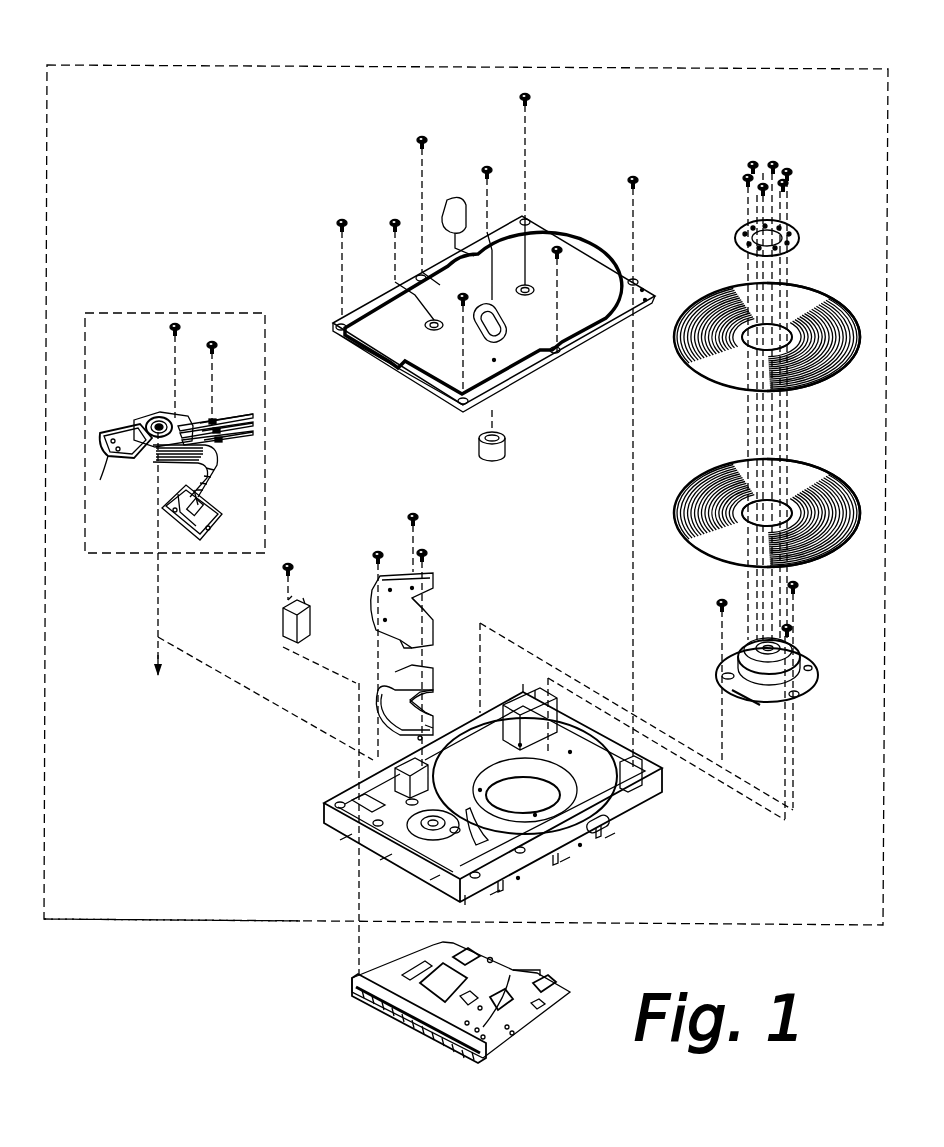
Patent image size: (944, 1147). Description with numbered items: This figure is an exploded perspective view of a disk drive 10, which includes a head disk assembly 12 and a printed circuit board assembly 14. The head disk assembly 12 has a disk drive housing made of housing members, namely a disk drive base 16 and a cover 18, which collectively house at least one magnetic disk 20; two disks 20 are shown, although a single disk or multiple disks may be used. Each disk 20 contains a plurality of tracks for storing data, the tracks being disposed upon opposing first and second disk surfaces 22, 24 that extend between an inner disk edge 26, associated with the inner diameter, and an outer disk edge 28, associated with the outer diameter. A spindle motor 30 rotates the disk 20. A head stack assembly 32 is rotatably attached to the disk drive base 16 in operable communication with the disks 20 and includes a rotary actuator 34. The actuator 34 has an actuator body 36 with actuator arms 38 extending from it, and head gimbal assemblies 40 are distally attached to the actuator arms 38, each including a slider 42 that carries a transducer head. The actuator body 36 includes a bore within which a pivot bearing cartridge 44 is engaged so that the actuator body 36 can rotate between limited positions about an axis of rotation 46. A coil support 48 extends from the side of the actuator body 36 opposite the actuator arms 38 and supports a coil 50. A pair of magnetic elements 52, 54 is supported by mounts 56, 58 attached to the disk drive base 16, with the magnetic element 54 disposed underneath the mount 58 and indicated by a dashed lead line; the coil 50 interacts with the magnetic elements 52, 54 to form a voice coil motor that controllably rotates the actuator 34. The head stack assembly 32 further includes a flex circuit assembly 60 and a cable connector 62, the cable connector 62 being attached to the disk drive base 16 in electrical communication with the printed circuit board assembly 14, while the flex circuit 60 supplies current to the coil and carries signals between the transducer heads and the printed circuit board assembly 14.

The disk drive 10 is at (258, 42).
The head disk assembly 12 is at (193, 922).
The printed circuit board assembly 14 is at (553, 1000).
The disk drive base 16 is at (535, 869).
The cover 18 is at (583, 318).
The magnetic disk 20 is at (708, 303).
The first disk surface 22 is at (833, 307).
The second disk surface 24 is at (820, 378).
The inner disk edge 26 is at (742, 344).
The outer disk edge 28 is at (714, 386).
The spindle motor 30 is at (800, 662).
The head stack assembly 32 is at (207, 313).
The rotary actuator 34 is at (163, 418).
The actuator body 36 is at (140, 422).
The actuator arm 38 is at (220, 443).
The head gimbal assembly 40 is at (233, 440).
The slider 42 is at (253, 418).
The pivot bearing cartridge 44 is at (150, 420).
The axis of rotation 46 is at (160, 588).
The coil support 48 is at (112, 460).
The coil 50 is at (100, 436).
The magnetic element 52 is at (374, 701).
The magnetic element 54 is at (428, 612).
The mount 56 is at (428, 688).
The mount 58 is at (378, 610).
The flex circuit assembly 60 is at (217, 467).
The cable connector 62 is at (220, 513).